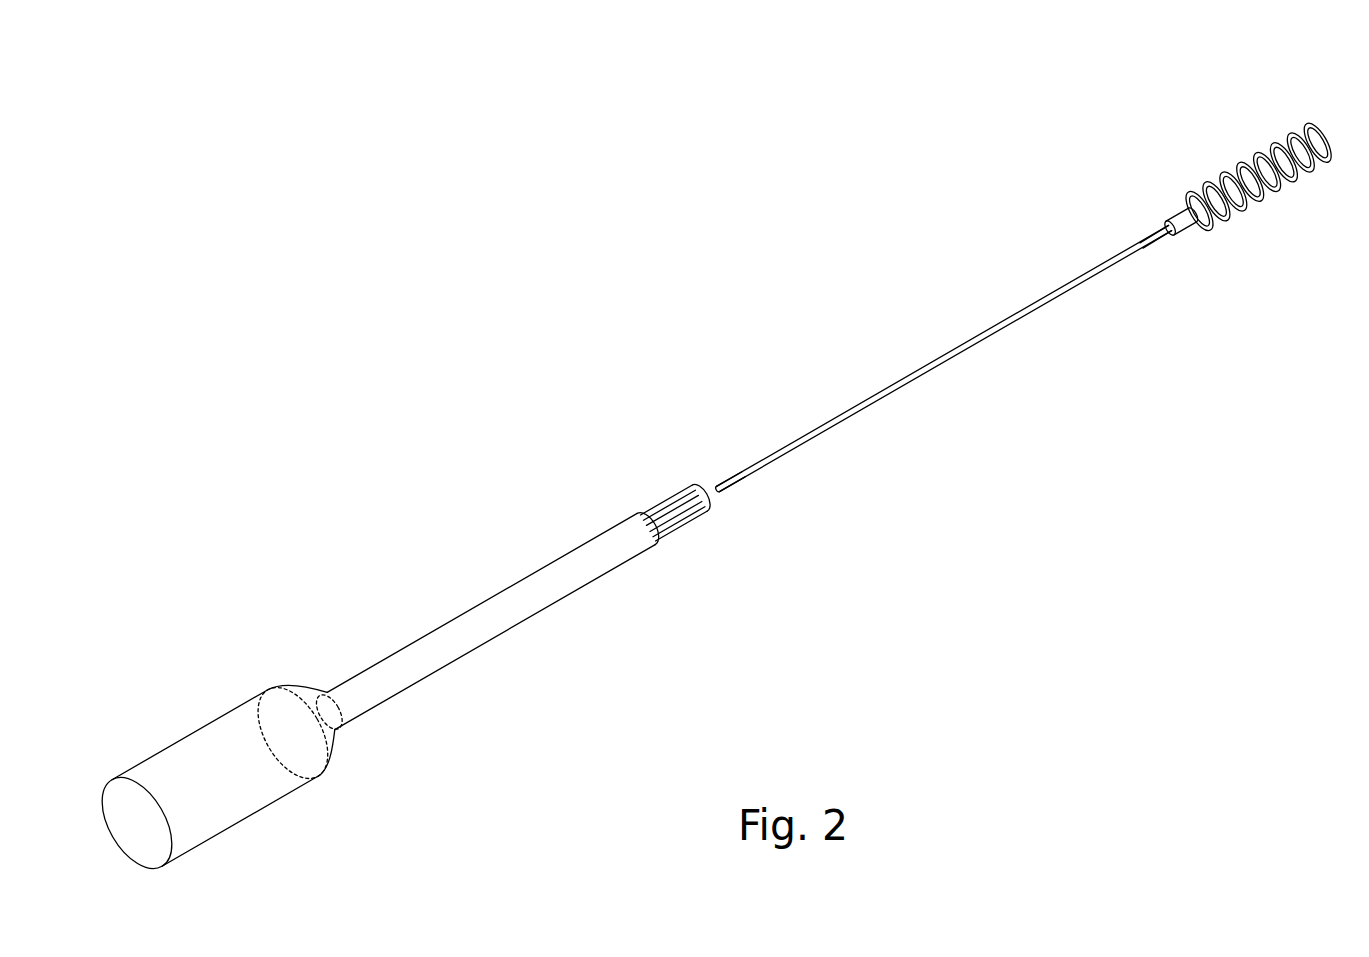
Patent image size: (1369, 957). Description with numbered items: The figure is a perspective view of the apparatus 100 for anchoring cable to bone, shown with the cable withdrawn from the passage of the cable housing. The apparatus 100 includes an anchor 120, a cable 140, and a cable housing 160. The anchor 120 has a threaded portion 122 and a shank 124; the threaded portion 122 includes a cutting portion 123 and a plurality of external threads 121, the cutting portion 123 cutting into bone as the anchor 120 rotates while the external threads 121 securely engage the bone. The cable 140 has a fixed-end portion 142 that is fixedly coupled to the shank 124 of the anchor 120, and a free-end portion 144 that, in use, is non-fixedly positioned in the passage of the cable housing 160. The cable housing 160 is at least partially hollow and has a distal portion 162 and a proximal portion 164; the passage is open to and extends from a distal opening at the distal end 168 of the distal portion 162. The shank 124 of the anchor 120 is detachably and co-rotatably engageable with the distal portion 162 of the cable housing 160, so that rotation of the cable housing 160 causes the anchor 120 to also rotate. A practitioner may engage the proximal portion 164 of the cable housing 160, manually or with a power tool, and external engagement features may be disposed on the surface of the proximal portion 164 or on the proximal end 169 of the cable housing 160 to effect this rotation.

The apparatus 100 is at (390, 114).
The anchor 120 is at (1147, 89).
The external threads 121 is at (1253, 157).
The threaded portion 122 is at (1308, 218).
The cutting portion 123 is at (1323, 130).
The shank 124 is at (1190, 232).
The cable 140 is at (938, 302).
The fixed-end portion 142 is at (1128, 213).
The free-end portion 144 is at (765, 496).
The cable housing 160 is at (310, 605).
The distal portion 162 is at (650, 571).
The proximal portion 164 is at (320, 822).
The distal end 168 is at (698, 487).
The proximal end 169 is at (127, 817).